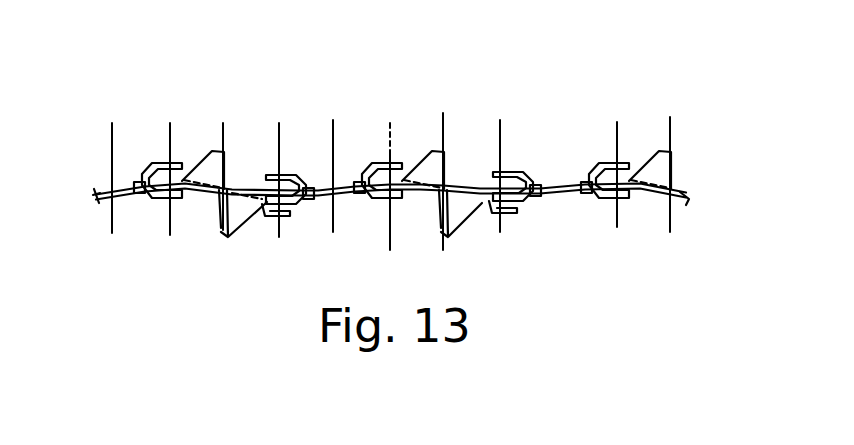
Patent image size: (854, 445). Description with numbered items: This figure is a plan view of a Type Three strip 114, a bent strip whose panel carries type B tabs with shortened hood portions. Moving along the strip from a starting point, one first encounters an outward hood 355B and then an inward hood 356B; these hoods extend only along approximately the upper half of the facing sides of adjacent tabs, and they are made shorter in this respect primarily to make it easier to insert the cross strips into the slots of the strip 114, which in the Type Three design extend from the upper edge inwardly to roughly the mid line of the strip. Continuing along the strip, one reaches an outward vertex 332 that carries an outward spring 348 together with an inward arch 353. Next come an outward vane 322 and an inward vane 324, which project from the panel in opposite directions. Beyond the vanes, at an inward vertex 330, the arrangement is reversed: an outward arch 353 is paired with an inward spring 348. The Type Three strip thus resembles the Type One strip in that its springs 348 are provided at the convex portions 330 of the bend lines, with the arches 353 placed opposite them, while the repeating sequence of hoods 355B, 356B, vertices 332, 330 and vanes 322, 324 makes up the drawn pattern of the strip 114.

The strip 114 is at (683, 167).
The outward vane 322 is at (207, 153).
The inward vane 324 is at (262, 178).
The inward vertex 330 is at (299, 207).
The outward vertex 332 is at (388, 200).
The spring 348 is at (392, 170).
The arch 353 is at (246, 182).
The outward hood 355B is at (311, 187).
The inward hood 356B is at (363, 173).